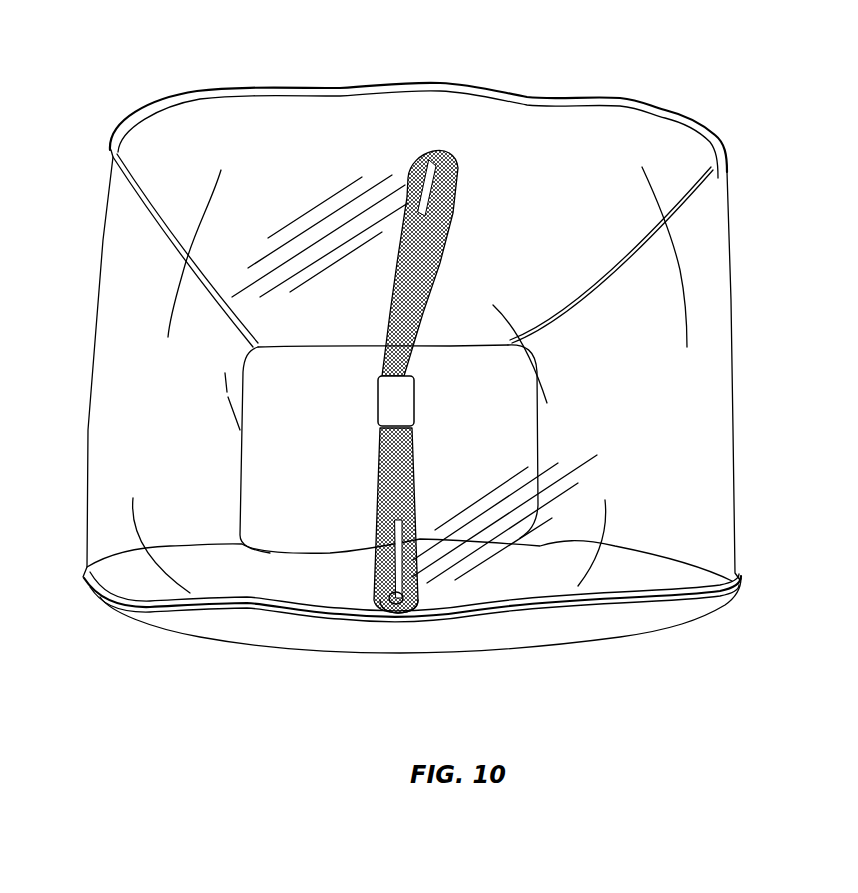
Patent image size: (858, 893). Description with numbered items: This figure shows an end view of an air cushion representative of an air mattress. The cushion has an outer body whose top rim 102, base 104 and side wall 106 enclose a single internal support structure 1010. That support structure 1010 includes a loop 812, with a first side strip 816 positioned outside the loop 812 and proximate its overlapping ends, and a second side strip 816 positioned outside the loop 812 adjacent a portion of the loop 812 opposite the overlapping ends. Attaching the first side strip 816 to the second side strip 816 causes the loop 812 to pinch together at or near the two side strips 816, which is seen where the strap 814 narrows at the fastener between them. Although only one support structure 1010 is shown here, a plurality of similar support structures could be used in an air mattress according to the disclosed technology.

The top rim of container body 102 is at (527, 127).
The base 104 is at (593, 625).
The side wall 106 is at (738, 537).
The loop 812 is at (375, 598).
The strap loop 814 is at (430, 167).
The side strip 816 is at (376, 404).
The support structure 1010 is at (376, 517).